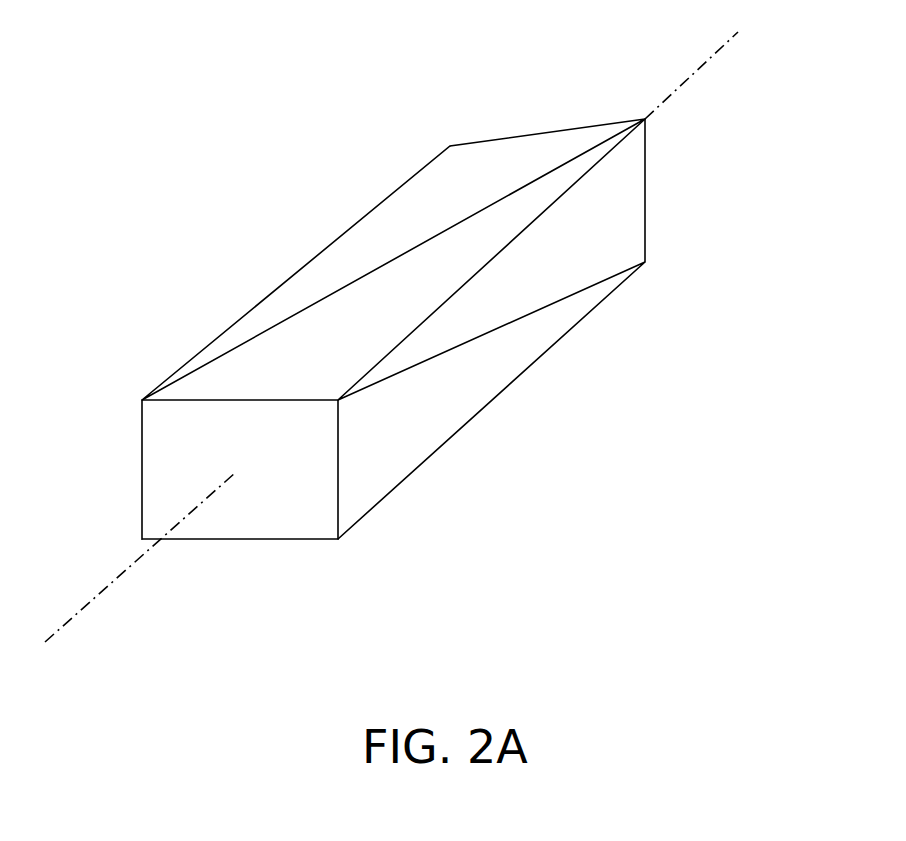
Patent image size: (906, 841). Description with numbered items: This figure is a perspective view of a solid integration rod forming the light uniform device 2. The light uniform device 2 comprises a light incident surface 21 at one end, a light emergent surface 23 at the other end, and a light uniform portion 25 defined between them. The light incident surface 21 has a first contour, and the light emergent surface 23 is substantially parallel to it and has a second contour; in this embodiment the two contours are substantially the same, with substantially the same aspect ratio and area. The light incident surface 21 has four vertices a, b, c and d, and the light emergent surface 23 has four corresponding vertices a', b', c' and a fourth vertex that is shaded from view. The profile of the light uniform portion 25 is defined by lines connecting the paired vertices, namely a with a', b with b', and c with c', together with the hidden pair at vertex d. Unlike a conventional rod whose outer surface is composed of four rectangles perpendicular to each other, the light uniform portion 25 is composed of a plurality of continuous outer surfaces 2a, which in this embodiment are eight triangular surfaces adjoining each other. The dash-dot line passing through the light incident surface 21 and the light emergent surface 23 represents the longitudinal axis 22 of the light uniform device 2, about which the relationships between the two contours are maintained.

The light uniform device 2 is at (417, 337).
The continuous outer surfaces 2a is at (258, 373).
The light incident surface 21 is at (280, 512).
The longitudinal axis 22 is at (682, 75).
The light emergent surface 23 is at (647, 200).
The light uniform portion 25 is at (532, 327).
The vertex a is at (124, 381).
The vertex b is at (358, 425).
The vertex c is at (359, 565).
The vertex d is at (140, 539).
The vertex a' is at (434, 123).
The vertex b' is at (693, 137).
The vertex c' is at (674, 287).